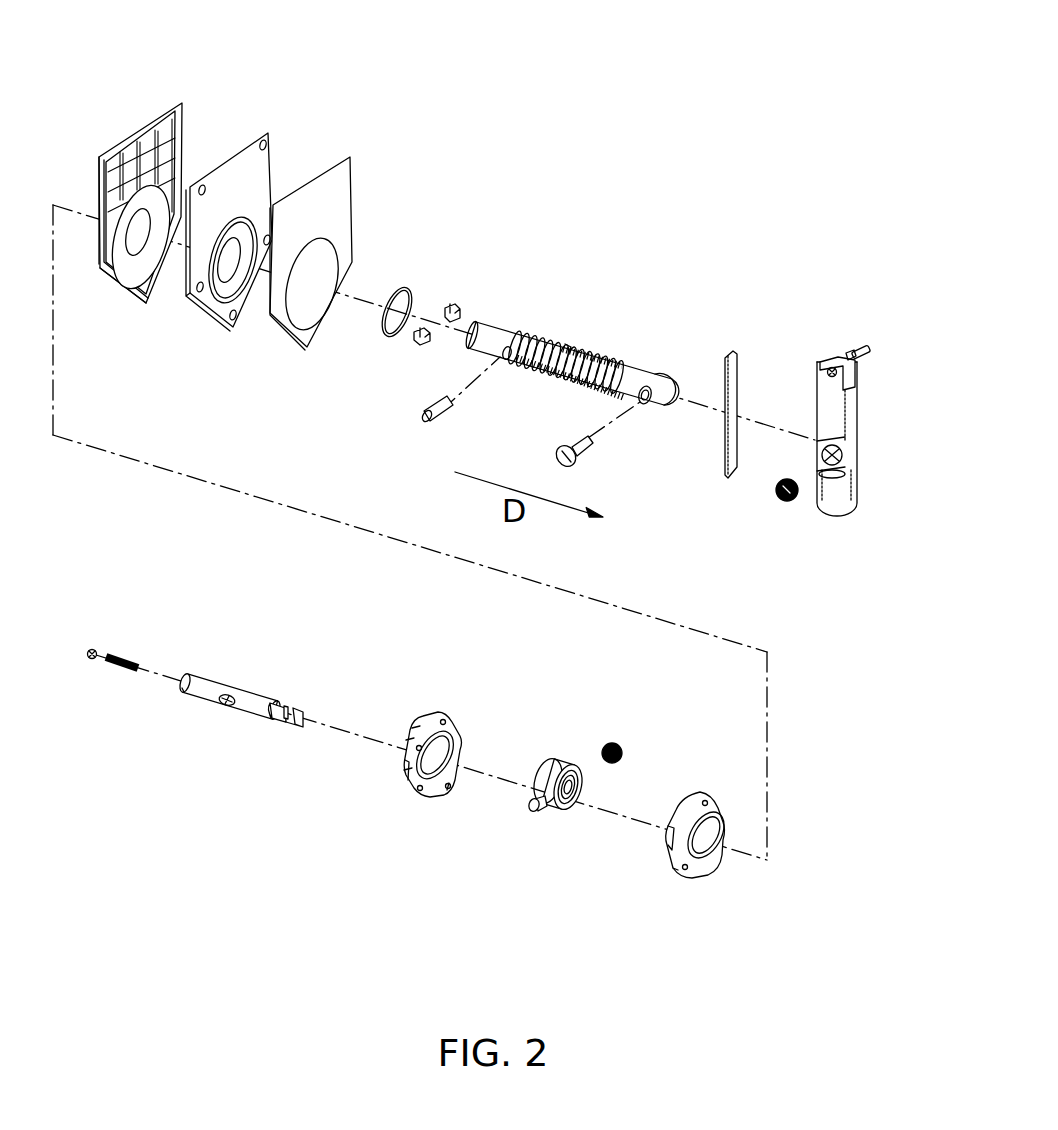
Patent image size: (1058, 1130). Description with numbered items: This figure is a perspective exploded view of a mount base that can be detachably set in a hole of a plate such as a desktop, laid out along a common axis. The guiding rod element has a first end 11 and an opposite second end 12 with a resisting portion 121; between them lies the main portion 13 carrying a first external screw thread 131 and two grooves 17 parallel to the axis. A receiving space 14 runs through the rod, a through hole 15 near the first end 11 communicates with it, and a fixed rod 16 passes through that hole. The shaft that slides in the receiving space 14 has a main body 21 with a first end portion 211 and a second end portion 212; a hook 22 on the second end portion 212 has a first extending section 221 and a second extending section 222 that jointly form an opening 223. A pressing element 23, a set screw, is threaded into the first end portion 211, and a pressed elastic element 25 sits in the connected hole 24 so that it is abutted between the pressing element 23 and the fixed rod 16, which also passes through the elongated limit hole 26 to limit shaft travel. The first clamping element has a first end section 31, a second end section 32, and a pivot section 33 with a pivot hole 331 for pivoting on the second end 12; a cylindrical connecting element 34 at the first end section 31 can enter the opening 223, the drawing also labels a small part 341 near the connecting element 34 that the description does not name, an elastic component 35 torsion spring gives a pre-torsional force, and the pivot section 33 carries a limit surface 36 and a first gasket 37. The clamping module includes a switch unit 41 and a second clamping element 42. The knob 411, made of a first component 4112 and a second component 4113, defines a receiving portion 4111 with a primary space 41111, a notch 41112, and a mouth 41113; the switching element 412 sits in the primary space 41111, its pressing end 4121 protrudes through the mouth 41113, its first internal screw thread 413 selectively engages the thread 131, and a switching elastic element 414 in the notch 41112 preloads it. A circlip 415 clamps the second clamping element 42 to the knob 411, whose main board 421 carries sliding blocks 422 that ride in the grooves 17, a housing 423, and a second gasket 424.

The first end 11 is at (488, 328).
The second end 12 is at (657, 377).
The resisting portion 121 is at (670, 400).
The main portion 13 is at (537, 333).
The first external screw thread 131 is at (567, 343).
The receiving space 14 is at (607, 353).
The through hole 15 is at (505, 360).
The fixed rod 16 is at (428, 417).
The grooves 17 is at (557, 380).
The main body 21 is at (210, 685).
The first end portion 211 is at (185, 693).
The second end portion 212 is at (257, 712).
The hook 22 is at (263, 590).
The first extending section 221 is at (283, 710).
The second extending section 222 is at (300, 710).
The opening 223 is at (288, 710).
The pressing element 23 is at (92, 660).
The connected hole 24 is at (187, 685).
The pressed elastic element 25 is at (127, 668).
The limit hole 26 is at (230, 708).
The first end section 31 is at (855, 367).
The second end section 32 is at (830, 518).
The pivot section 33 is at (845, 462).
The pivot hole 331 is at (843, 443).
The connecting element 34 is at (860, 347).
The pin hole 341 is at (850, 358).
The elastic component 35 is at (780, 503).
The limit surface 36 is at (810, 472).
The first gasket 37 is at (733, 352).
The switch unit 41 is at (711, 713).
The knob 411 is at (702, 793).
The receiving portion 4111 is at (710, 843).
The first component 4112 is at (415, 738).
The primary space 41111 is at (432, 793).
The notch 41112 is at (460, 745).
The mouth 41113 is at (403, 787).
The second component 4113 is at (672, 873).
The switching element 412 is at (567, 767).
The pressing end 4121 is at (533, 810).
The first internal screw thread 413 is at (573, 802).
The switching elastic element 414 is at (612, 753).
The circlip 415 is at (405, 288).
The second clamping element 42 is at (356, 76).
The main board 421 is at (270, 160).
The sliding blocks 422 is at (453, 310).
The housing 423 is at (188, 107).
The second gasket 424 is at (338, 182).